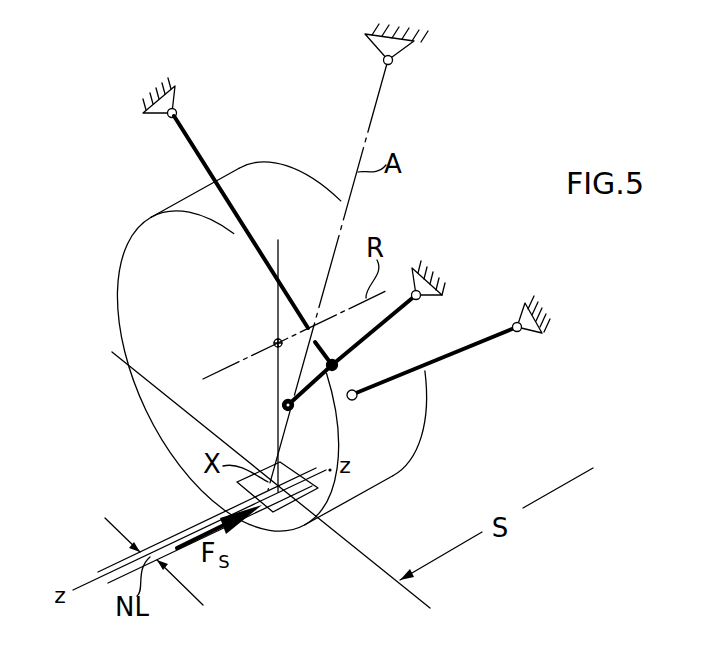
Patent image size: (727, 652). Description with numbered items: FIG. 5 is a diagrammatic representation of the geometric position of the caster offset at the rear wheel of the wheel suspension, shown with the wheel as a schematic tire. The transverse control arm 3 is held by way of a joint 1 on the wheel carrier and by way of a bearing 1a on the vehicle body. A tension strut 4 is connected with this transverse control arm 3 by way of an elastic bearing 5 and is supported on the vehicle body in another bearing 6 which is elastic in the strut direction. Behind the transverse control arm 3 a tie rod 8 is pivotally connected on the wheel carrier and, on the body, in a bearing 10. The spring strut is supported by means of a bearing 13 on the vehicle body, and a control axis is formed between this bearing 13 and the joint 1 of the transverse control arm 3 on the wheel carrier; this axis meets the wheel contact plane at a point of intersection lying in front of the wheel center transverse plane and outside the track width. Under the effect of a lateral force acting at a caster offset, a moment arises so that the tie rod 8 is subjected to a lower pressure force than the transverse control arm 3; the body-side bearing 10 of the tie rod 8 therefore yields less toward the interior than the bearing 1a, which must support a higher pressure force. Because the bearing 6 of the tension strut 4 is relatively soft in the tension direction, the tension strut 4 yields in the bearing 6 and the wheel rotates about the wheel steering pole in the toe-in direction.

The joint 1 is at (283, 405).
The bearing 1a is at (422, 270).
The transverse control arm 3 is at (378, 328).
The tension strut 4 is at (200, 157).
The elastic bearing 5 is at (334, 358).
The bearing 6 is at (176, 108).
The tie rod 8 is at (446, 356).
The bearing 10 is at (516, 322).
The bearing 13 is at (393, 62).